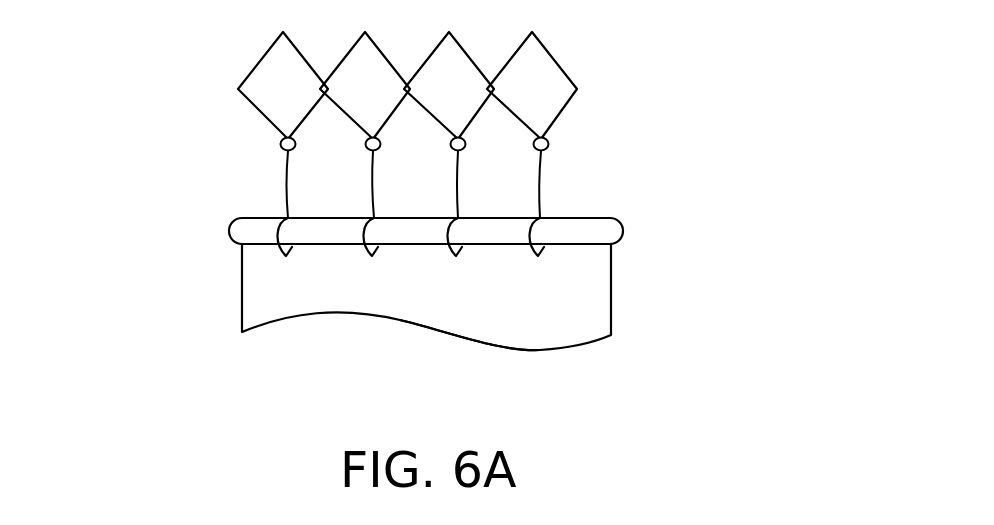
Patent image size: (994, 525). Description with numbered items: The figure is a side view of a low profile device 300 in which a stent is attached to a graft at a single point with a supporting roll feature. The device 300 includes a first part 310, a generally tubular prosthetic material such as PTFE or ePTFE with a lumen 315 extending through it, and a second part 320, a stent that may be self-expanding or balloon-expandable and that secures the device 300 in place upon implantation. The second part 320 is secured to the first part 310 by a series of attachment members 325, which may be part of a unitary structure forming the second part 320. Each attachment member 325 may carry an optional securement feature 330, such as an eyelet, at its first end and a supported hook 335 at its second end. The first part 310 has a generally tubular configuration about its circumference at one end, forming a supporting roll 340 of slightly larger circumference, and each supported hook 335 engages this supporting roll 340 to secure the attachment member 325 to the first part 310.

The device 300 is at (148, 122).
The first part 310 is at (565, 317).
The lumen 315 is at (430, 354).
The second part 320 is at (496, 141).
The attachment members 325 is at (572, 161).
The securement features 330 is at (570, 130).
The supported hook 335 is at (534, 254).
The supporting roll 340 is at (587, 233).